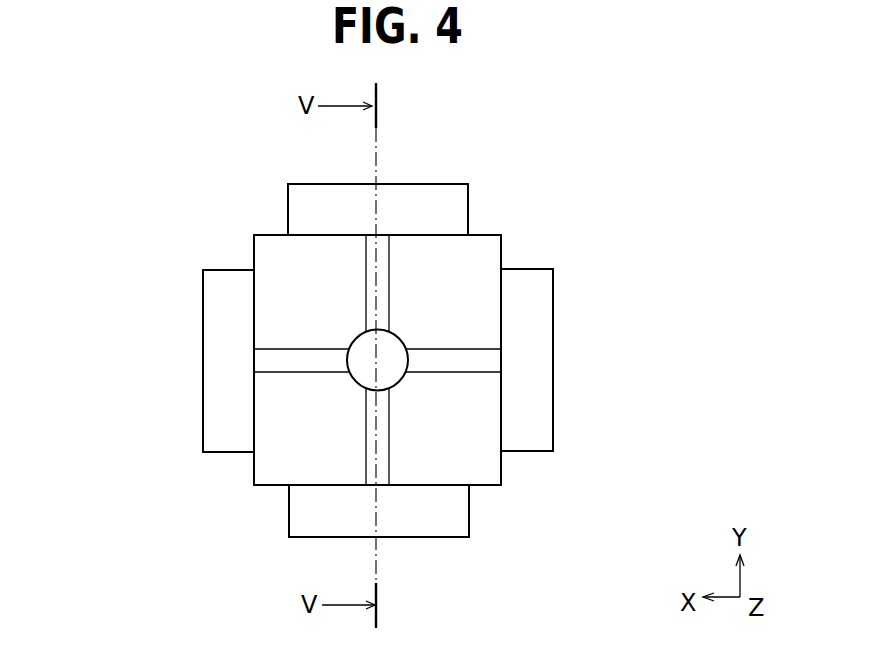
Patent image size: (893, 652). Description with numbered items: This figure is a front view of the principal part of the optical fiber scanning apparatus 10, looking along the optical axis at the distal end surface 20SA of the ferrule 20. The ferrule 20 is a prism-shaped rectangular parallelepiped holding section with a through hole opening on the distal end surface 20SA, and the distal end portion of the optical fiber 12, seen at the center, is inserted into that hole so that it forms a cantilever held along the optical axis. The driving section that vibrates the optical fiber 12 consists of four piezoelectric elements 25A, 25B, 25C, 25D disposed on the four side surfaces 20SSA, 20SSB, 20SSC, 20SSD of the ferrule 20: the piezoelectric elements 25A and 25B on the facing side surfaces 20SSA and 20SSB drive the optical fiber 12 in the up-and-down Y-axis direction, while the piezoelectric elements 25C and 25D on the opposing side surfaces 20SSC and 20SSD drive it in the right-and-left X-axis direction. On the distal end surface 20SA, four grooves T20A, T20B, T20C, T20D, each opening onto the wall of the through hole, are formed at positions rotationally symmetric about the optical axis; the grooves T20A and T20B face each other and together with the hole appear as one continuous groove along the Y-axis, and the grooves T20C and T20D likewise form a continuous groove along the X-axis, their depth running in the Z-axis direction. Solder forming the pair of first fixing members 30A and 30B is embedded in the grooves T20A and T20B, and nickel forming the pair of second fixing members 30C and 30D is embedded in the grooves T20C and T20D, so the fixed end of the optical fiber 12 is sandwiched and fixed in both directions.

The optical fiber scanning apparatus 10 is at (97, 183).
The optical fiber 12 is at (393, 334).
The ferrule 20 is at (254, 467).
The piezoelectric element 25A is at (302, 184).
The piezoelectric element 25B is at (303, 537).
The piezoelectric element 25C is at (203, 308).
The piezoelectric element 25D is at (553, 305).
The first fixing member 30A is at (366, 302).
The first fixing member 30B is at (366, 452).
The second fixing member 30C is at (290, 373).
The second fixing member 30D is at (467, 349).
The groove T20A is at (384, 234).
The groove T20B is at (386, 488).
The groove T20C is at (254, 355).
The groove T20D is at (501, 362).
The distal end surface 20SA is at (472, 418).
The side surface 20SSA is at (483, 233).
The side surface 20SSB is at (484, 488).
The side surface 20SSC is at (254, 257).
The side surface 20SSD is at (501, 254).